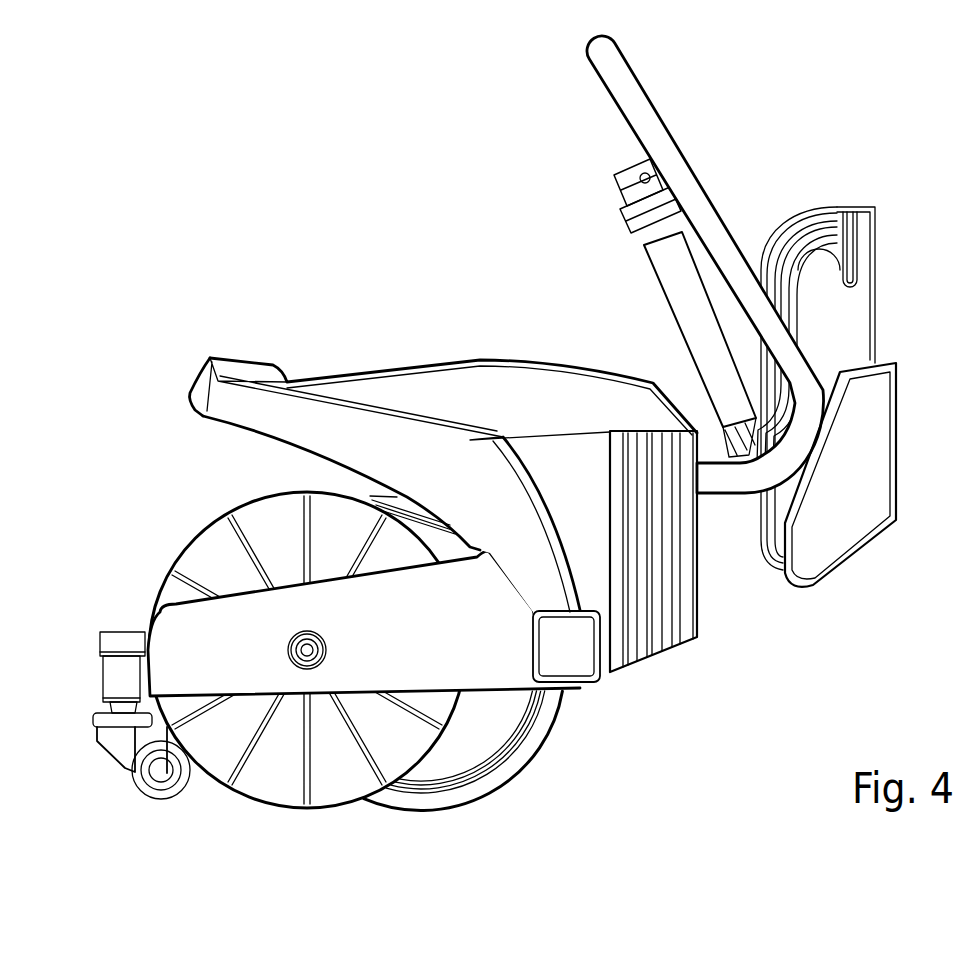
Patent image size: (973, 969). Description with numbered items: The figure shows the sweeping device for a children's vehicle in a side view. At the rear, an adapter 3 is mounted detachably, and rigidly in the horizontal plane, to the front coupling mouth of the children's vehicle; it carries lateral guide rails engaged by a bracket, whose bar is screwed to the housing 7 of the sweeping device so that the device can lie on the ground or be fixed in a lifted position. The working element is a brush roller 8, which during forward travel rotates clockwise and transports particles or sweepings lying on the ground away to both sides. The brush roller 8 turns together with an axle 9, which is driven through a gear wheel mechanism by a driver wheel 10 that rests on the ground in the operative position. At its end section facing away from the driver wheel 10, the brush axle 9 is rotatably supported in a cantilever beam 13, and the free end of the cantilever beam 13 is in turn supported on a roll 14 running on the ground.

The adapter 3 is at (858, 432).
The housing 7 is at (673, 627).
The brush roller 8 is at (335, 780).
The axle 9 is at (307, 656).
The driver wheel 10 is at (515, 755).
The cantilever beam 13 is at (490, 677).
The roll 14 is at (183, 783).